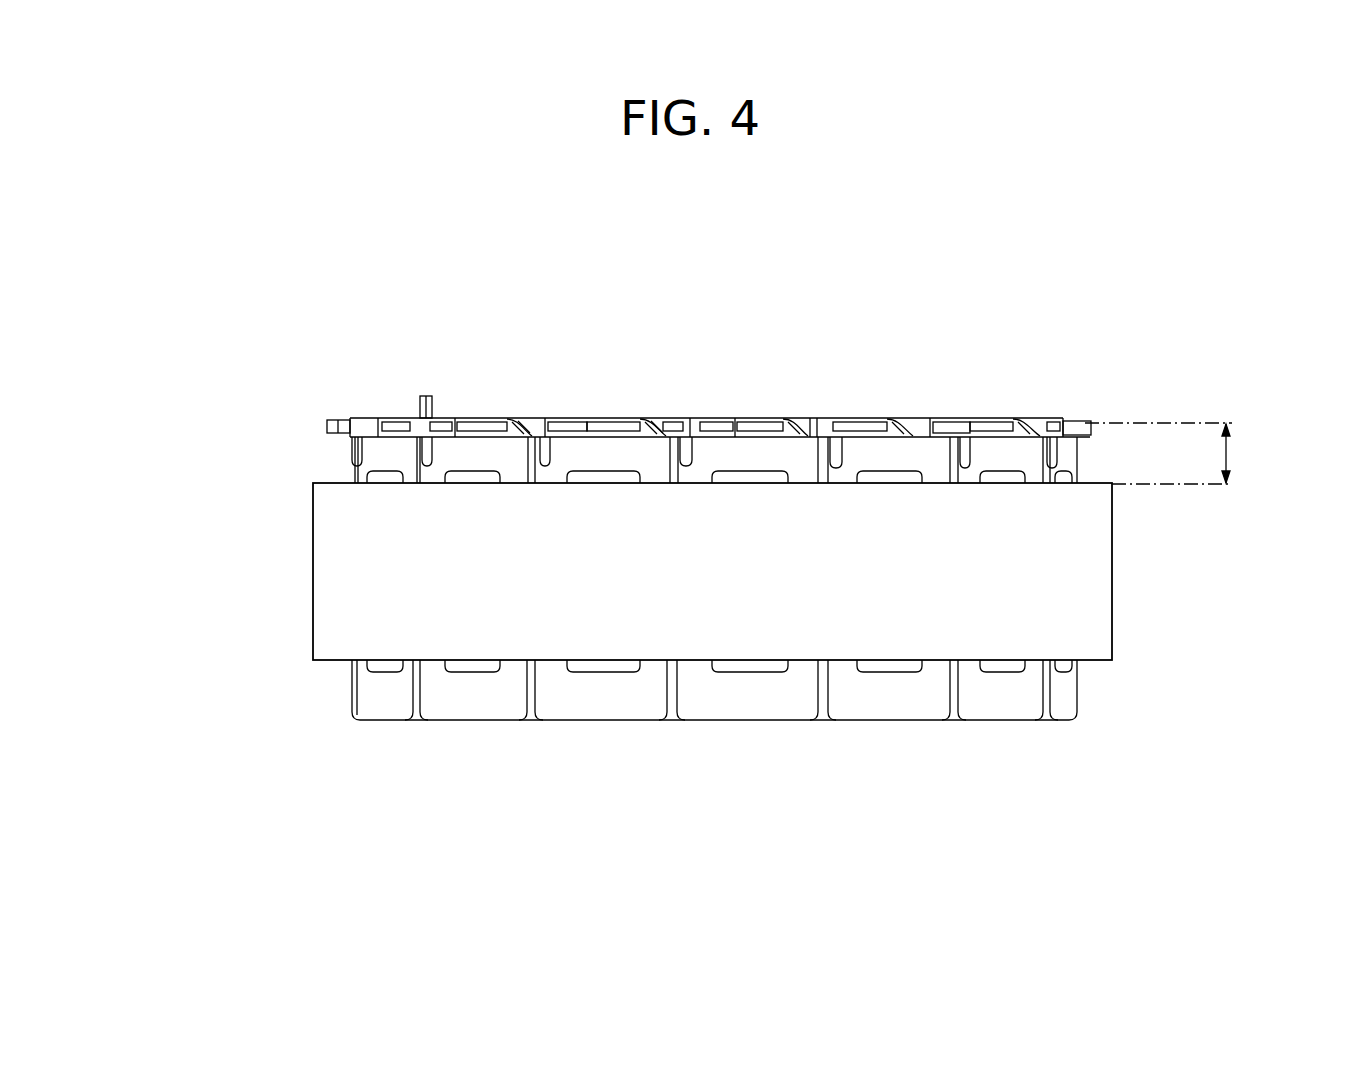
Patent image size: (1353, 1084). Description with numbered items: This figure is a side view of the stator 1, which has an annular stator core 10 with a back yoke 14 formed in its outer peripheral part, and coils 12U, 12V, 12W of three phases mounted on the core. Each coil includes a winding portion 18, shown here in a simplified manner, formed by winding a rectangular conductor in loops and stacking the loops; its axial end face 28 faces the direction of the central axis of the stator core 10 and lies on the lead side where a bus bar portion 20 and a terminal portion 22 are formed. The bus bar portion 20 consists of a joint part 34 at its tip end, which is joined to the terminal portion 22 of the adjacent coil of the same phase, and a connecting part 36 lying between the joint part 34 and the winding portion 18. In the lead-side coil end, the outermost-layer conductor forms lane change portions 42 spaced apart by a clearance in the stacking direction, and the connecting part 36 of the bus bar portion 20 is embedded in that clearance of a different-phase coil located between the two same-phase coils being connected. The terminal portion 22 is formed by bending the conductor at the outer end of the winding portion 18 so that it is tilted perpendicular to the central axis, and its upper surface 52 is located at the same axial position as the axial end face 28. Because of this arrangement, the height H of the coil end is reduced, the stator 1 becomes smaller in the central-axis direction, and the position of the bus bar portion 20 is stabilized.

The stator 1 is at (1149, 351).
The stator core 10 is at (308, 601).
The coil 12U is at (372, 463).
The coil 12V is at (475, 462).
The coil 12W is at (598, 462).
The back yoke 14 is at (1097, 483).
The winding portion 18 is at (395, 470).
The bus bar portion 20 is at (733, 249).
The terminal portion 22 is at (362, 419).
The axial end face 28 is at (462, 432).
The joint part 34 is at (697, 420).
The connecting part 36 is at (653, 418).
The lane change portion 42 is at (467, 437).
The upper surface 52 is at (340, 419).
The height H is at (1236, 453).